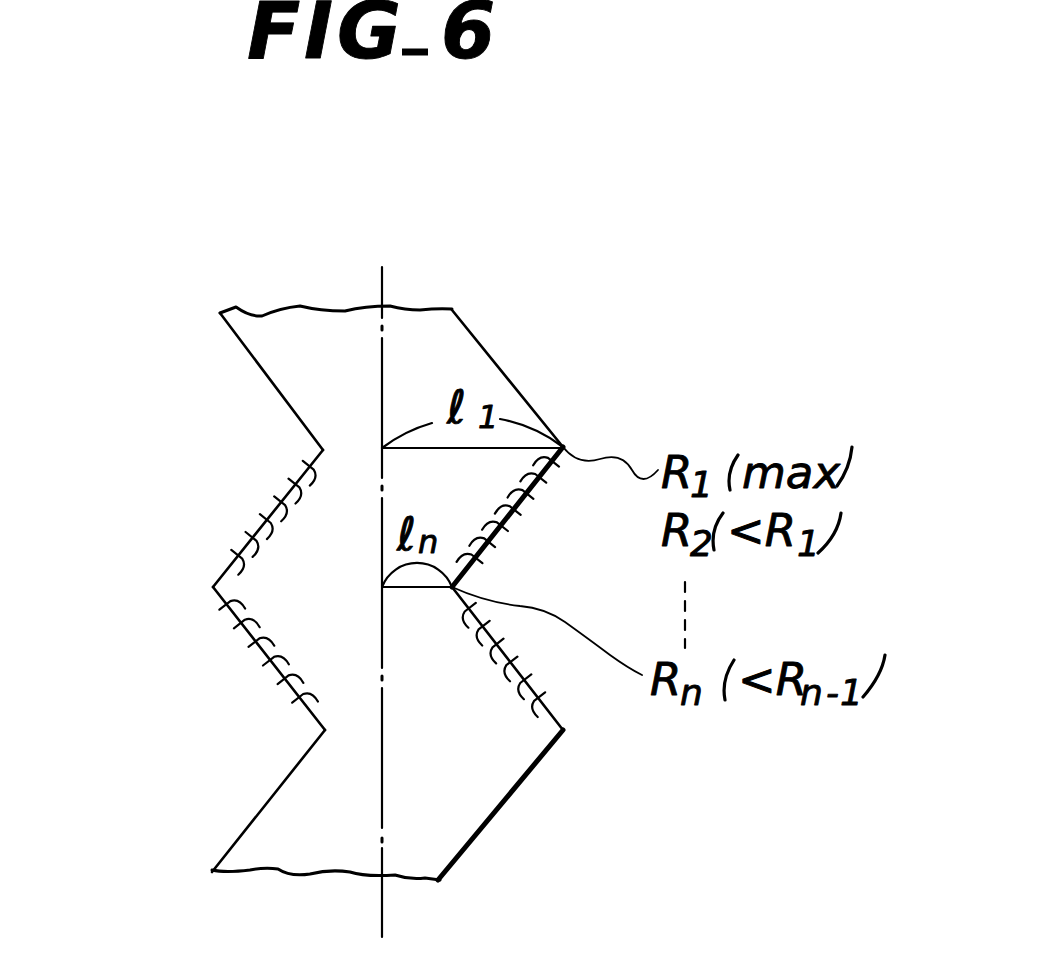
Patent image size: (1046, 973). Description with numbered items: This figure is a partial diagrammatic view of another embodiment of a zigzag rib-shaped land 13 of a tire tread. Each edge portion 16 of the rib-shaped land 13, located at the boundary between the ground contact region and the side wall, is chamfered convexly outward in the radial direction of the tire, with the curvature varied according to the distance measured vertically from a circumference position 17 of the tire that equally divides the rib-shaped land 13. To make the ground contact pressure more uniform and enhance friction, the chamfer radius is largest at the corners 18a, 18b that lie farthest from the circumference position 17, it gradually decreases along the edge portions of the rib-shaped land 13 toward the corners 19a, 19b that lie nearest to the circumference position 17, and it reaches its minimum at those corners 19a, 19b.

The rib-shaped land 13 is at (503, 318).
The edge portion 16 is at (520, 387).
The circumference position 17 is at (387, 800).
The corner 18a is at (563, 447).
The corner 19a is at (452, 587).
The corner 18b is at (213, 587).
The corner 19b is at (323, 450).